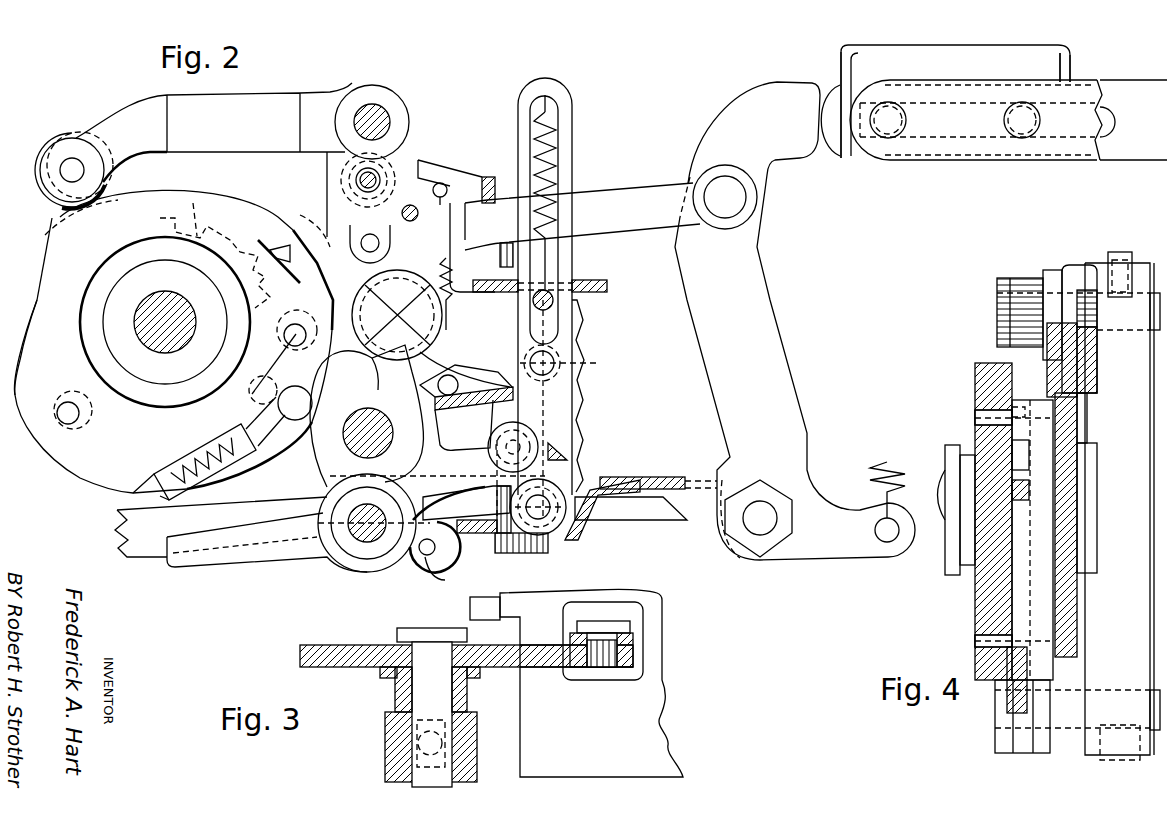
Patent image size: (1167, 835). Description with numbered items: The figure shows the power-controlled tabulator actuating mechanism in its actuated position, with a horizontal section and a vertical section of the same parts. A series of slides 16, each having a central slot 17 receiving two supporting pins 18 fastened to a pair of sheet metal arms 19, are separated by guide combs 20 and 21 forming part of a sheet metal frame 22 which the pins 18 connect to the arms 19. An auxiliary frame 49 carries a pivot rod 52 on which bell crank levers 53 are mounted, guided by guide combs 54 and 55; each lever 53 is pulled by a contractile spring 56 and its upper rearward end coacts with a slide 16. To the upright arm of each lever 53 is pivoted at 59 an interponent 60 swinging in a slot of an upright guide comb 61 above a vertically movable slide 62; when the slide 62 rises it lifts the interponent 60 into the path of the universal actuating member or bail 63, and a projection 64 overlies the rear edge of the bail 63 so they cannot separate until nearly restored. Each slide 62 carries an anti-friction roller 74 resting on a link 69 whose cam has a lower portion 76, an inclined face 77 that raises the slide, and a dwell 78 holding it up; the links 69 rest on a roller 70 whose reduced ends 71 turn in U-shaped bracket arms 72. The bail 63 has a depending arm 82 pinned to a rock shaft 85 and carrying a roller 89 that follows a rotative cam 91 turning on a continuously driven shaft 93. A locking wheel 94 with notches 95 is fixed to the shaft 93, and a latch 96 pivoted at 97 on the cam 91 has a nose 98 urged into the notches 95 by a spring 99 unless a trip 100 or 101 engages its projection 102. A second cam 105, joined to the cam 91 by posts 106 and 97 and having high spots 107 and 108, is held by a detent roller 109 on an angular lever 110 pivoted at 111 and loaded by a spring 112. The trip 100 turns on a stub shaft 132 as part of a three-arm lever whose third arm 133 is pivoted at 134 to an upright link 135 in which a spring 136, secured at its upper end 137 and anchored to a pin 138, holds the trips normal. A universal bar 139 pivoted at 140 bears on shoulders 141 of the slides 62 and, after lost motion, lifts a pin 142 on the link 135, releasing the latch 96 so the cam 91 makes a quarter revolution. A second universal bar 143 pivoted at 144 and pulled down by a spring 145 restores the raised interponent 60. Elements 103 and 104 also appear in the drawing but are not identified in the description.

In FIG. 2, the slide 16 is at (835, 150).
In FIG. 2, the central slot 17 is at (1106, 116).
In FIG. 2, the supporting pins 18 is at (955, 120).
In FIG. 2, the sheet metal arms 19 is at (1000, 92).
In FIG. 2, the guide comb 20 is at (845, 63).
In FIG. 2, the guide comb 21 is at (1072, 64).
In FIG. 2, the sheet metal frame 22 is at (955, 101).
In FIG. 3, the auxiliary frame 49 is at (470, 743).
In FIG. 4, the auxiliary frame 49 is at (1078, 503).
In FIG. 2, the pivot rod 52 is at (758, 518).
In FIG. 2, the bell crank lever 53 is at (795, 321).
In FIG. 2, the guide comb 54 is at (670, 477).
In FIG. 3, the guide comb 54 is at (662, 648).
In FIG. 2, the guide comb 55 is at (605, 275).
In FIG. 2, the contractile spring 56 is at (887, 462).
In FIG. 2, the pivot 59 is at (725, 197).
In FIG. 2, the interponent 60 is at (582, 216).
In FIG. 2, the upright guide comb 61 is at (466, 236).
In FIG. 2, the slide 62 is at (500, 266).
In FIG. 2, the universal actuating member 63 is at (323, 238).
In FIG. 2, the projection 64 is at (408, 205).
In FIG. 2, the link 69 is at (401, 527).
In FIG. 2, the supporting roller 70 is at (457, 556).
In FIG. 2, the reduced ends 71 is at (420, 562).
In FIG. 2, the U-shaped bracket arms 72 is at (425, 566).
In FIG. 2, the anti-friction roller 74 is at (522, 430).
In FIG. 2, the lower cam portion 76 is at (592, 490).
In FIG. 2, the inclined face 77 is at (570, 456).
In FIG. 2, the dwell 78 is at (450, 475).
In FIG. 2, the supporting arm 82 is at (366, 416).
In FIG. 2, the rock shaft 85 is at (343, 433).
In FIG. 2, the anti-friction roller 89 is at (445, 341).
In FIG. 2, the rotative cam 91 is at (173, 341).
In FIG. 4, the rotative cam 91 is at (975, 380).
In FIG. 2, the motor-driven shaft 93 is at (165, 346).
In FIG. 4, the motor-driven shaft 93 is at (1097, 502).
In FIG. 2, the locking wheel 94 is at (237, 225).
In FIG. 4, the locking wheel 94 is at (1020, 455).
In FIG. 2, the notches 95 is at (197, 212).
In FIG. 2, the latch 96 is at (292, 276).
In FIG. 4, the latch 96 is at (1007, 684).
In FIG. 2, the pivot 97 is at (289, 341).
In FIG. 4, the pivot 97 is at (975, 641).
In FIG. 2, the engaging nose 98 is at (277, 247).
In FIG. 2, the spring 99 is at (190, 459).
In FIG. 4, the spring 99 is at (957, 510).
In FIG. 2, the trip 100 is at (267, 542).
In FIG. 3, the trip 100 is at (345, 645).
In FIG. 4, the trip 100 is at (1012, 720).
In FIG. 2, the second trip 101 is at (397, 315).
In FIG. 2, the projection 102 is at (357, 384).
In FIG. 2, the roller 103 is at (279, 446).
In FIG. 2, the housing wall 104 is at (25, 357).
In FIG. 2, the second cam 105 is at (38, 300).
In FIG. 4, the second cam 105 is at (1077, 443).
In FIG. 2, the separating post 106 is at (68, 402).
In FIG. 4, the separating post 106 is at (975, 417).
In FIG. 2, the high spot 107 is at (50, 226).
In FIG. 2, the high spot 108 is at (55, 408).
In FIG. 2, the detent roller 109 is at (62, 140).
In FIG. 4, the detent roller 109 is at (1047, 392).
In FIG. 2, the angular lever 110 is at (214, 160).
In FIG. 4, the angular lever 110 is at (1097, 383).
In FIG. 2, the pivot 111 is at (354, 121).
In FIG. 4, the pivot 111 is at (1071, 315).
In FIG. 2, the contractile spring 112 is at (362, 251).
In FIG. 2, the stub shaft 132 is at (330, 524).
In FIG. 3, the stub shaft 132 is at (430, 707).
In FIG. 4, the stub shaft 132 is at (1120, 692).
In FIG. 2, the third arm 133 is at (468, 482).
In FIG. 3, the third arm 133 is at (547, 668).
In FIG. 2, the pivot 134 is at (512, 507).
In FIG. 3, the pivot 134 is at (613, 630).
In FIG. 2, the link 135 is at (572, 148).
In FIG. 3, the link 135 is at (568, 642).
In FIG. 2, the contractile spring 136 is at (552, 126).
In FIG. 2, the upper end 137 is at (548, 92).
In FIG. 2, the fixed pin 138 is at (553, 300).
In FIG. 2, the universal bar 139 is at (492, 399).
In FIG. 2, the pivot 140 is at (450, 401).
In FIG. 2, the shoulders 141 is at (495, 416).
In FIG. 2, the pin 142 is at (571, 363).
In FIG. 2, the universal bar 143 is at (490, 178).
In FIG. 2, the pivot 144 is at (341, 181).
In FIG. 2, the contractile spring 145 is at (450, 310).